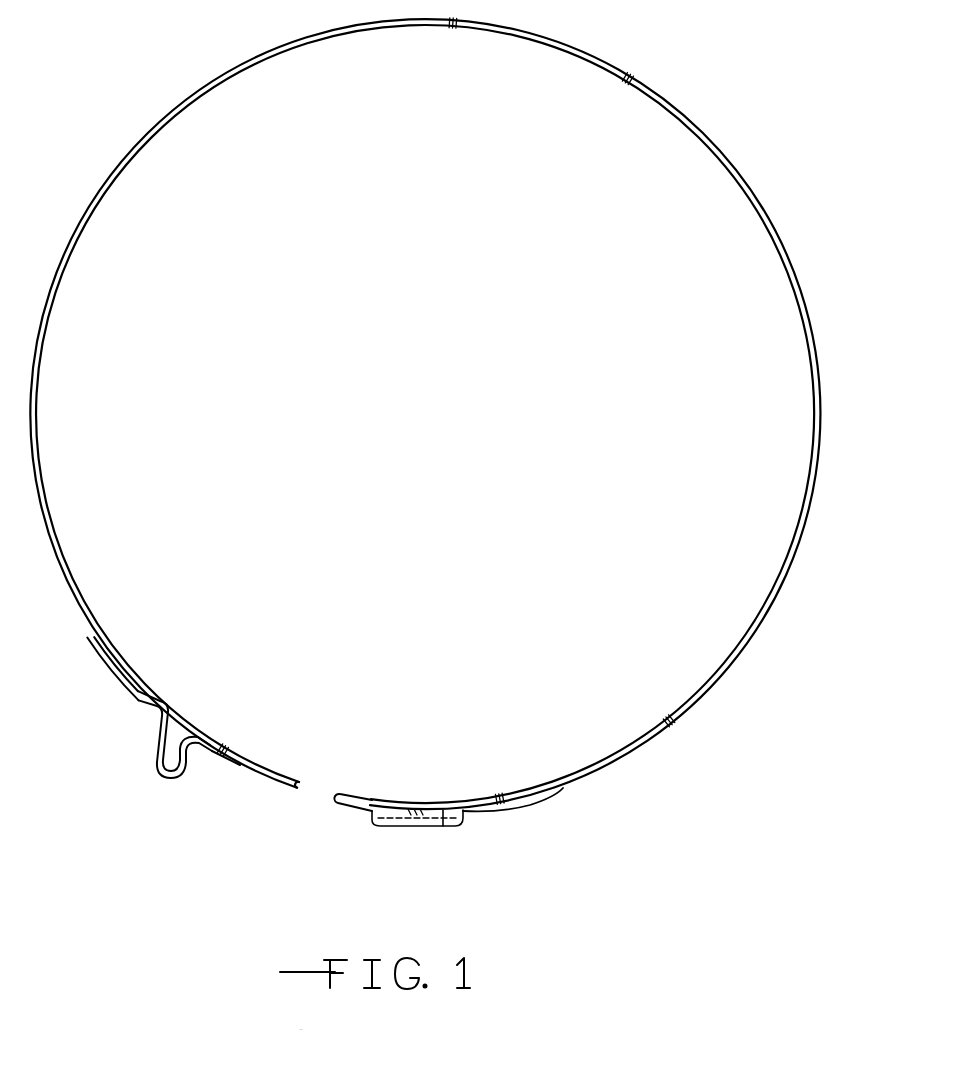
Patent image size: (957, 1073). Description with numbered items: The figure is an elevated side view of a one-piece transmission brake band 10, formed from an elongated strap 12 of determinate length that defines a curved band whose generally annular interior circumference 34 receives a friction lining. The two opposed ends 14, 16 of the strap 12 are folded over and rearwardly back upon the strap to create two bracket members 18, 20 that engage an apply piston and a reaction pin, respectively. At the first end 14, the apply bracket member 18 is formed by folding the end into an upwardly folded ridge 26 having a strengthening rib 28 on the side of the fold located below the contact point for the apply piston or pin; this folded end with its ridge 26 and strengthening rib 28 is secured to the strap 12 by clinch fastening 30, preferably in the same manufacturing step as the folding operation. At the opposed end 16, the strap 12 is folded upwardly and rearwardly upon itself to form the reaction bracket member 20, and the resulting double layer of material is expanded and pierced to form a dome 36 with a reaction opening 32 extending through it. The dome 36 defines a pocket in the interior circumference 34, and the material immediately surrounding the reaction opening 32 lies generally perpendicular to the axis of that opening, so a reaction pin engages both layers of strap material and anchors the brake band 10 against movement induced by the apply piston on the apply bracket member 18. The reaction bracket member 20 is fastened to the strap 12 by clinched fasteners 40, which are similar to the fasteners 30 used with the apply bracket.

The brake band 10 is at (634, 74).
The strap 12 is at (720, 152).
The end 14 is at (277, 766).
The end 16 is at (324, 791).
The apply bracket member 18 is at (178, 717).
The reaction bracket member 20 is at (376, 817).
The folded ridge 26 is at (166, 758).
The strengthening rib 28 is at (208, 760).
The clinch fastening 30 is at (130, 676).
The reaction opening 32 is at (422, 828).
The interior circumference 34 is at (487, 797).
The dome 36 is at (465, 826).
The clinched fasteners 40 is at (533, 805).